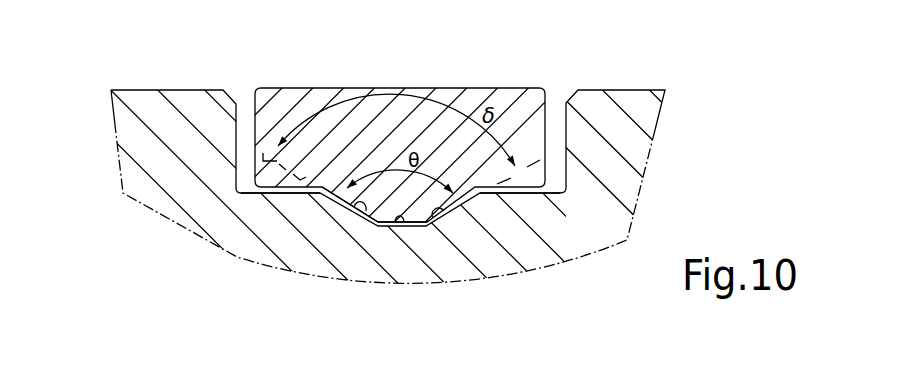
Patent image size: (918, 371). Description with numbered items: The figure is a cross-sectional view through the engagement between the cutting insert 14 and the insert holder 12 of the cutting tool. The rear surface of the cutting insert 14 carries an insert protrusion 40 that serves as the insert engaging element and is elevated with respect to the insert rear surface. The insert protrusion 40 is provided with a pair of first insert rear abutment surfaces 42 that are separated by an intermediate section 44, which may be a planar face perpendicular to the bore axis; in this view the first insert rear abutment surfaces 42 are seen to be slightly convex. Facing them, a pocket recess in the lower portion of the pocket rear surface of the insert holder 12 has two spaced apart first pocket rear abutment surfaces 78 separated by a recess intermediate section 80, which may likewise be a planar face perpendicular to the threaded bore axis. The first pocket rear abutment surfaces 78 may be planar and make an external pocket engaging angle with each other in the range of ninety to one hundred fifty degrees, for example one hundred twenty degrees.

The insert holder 12 is at (620, 85).
The cutting insert 14 is at (492, 81).
The insert protrusion 40 is at (354, 204).
The first insert rear abutment surfaces 42 is at (325, 236).
The intermediate section 44 is at (413, 227).
The first pocket rear abutment surfaces 78 is at (366, 215).
The recess intermediate section 80 is at (386, 194).